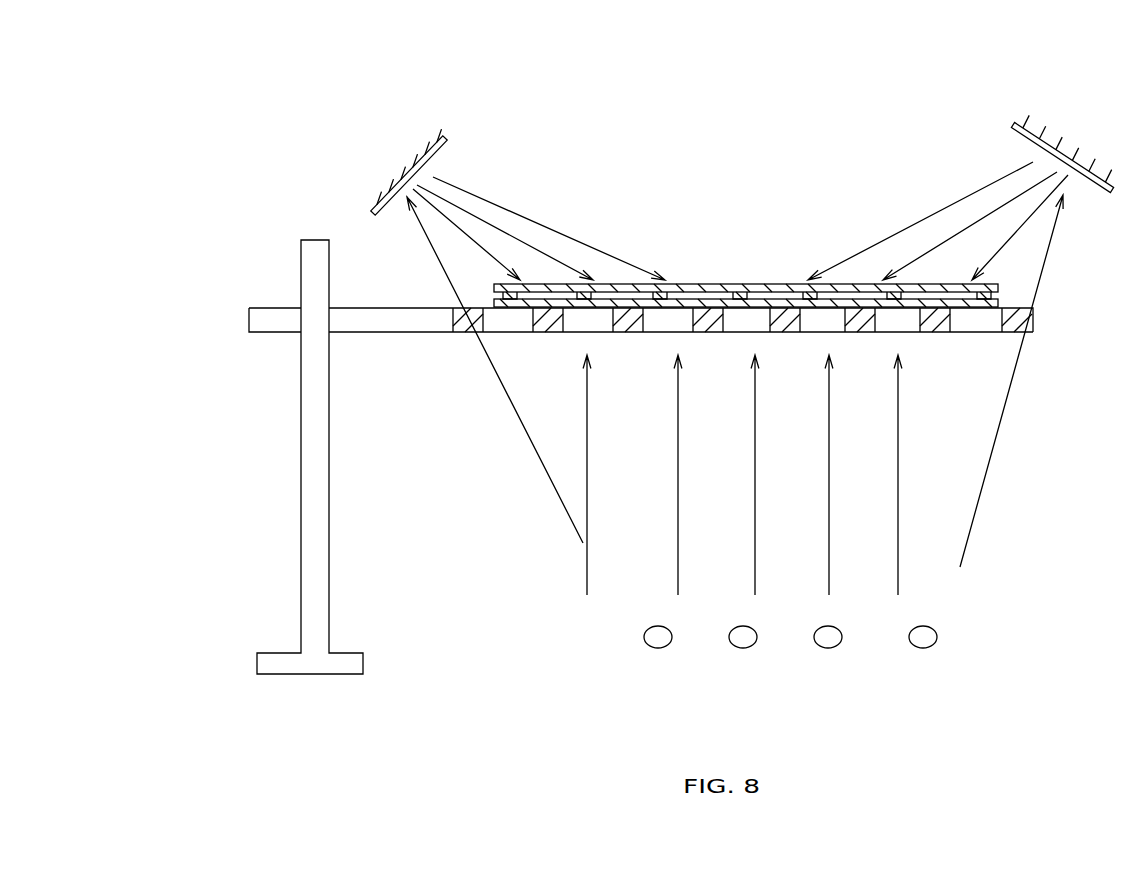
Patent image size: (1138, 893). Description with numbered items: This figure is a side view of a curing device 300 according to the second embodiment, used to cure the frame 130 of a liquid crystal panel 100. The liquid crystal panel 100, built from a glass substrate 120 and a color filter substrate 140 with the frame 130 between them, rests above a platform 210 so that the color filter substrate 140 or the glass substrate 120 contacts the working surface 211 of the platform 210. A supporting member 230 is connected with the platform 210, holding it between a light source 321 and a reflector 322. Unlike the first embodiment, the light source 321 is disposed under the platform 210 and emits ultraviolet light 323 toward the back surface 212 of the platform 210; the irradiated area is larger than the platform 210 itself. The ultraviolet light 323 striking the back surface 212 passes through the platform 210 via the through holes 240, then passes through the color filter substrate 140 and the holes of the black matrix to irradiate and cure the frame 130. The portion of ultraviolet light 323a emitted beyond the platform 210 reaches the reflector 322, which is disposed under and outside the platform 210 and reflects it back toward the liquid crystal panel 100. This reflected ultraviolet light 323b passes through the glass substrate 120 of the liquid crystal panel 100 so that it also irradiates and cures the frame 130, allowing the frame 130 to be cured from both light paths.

The liquid crystal panel 100 is at (798, 250).
The glass substrate 120 is at (998, 288).
The frame 130 is at (736, 283).
The color filter substrate 140 is at (998, 303).
The platform 210 is at (898, 325).
The working surface 211 is at (625, 318).
The back surface 212 is at (622, 320).
The supporting member 230 is at (372, 333).
The through holes 240 is at (968, 322).
The curing device 300 is at (312, 148).
The light source 321 is at (840, 652).
The reflector 322 is at (444, 140).
The ultraviolet light 323 is at (919, 463).
The ultraviolet light emitted beyond the platform 323a is at (529, 437).
The reflected ultraviolet light 323b is at (921, 200).